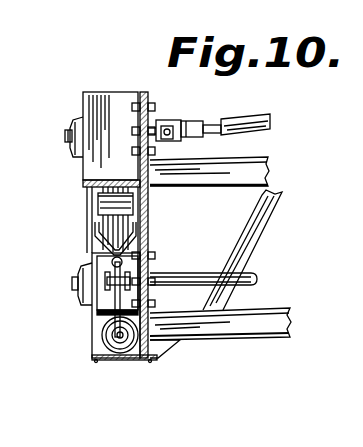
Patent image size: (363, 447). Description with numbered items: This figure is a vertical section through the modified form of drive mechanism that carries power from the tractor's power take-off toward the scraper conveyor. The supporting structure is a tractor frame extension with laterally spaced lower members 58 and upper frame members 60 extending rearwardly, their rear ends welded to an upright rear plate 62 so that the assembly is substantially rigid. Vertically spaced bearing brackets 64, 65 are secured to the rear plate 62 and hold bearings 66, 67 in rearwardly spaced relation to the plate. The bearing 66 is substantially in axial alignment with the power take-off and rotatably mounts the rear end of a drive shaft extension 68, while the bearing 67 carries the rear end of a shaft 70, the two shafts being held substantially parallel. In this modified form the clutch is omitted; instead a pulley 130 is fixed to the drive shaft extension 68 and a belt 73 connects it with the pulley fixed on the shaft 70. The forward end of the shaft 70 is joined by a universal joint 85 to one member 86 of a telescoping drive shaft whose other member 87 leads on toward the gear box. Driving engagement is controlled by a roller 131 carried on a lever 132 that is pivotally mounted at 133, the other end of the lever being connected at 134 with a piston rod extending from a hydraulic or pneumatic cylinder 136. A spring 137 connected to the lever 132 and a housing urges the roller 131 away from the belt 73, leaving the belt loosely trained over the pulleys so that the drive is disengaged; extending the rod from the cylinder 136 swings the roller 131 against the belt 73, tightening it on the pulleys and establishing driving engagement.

The lower frame members 58 is at (265, 320).
The upper frame members 60 is at (262, 172).
The rear plate 62 is at (148, 95).
The bearing bracket 64 is at (140, 265).
The bearing bracket 65 is at (150, 113).
The bearing 66 is at (92, 300).
The bearing 67 is at (75, 153).
The drive shaft extension 68 is at (258, 281).
The shaft 70 is at (66, 135).
The belt 73 is at (108, 222).
The universal joint 85 is at (172, 140).
The telescoping drive shaft member 86 is at (208, 124).
The telescoping drive shaft member 87 is at (254, 114).
The pulley 130 is at (107, 330).
The roller 131 is at (117, 208).
The lever 132 is at (98, 310).
The pivot 133 is at (104, 285).
The connection 134 is at (108, 357).
The cylinder 136 is at (112, 340).
The spring 137 is at (95, 256).